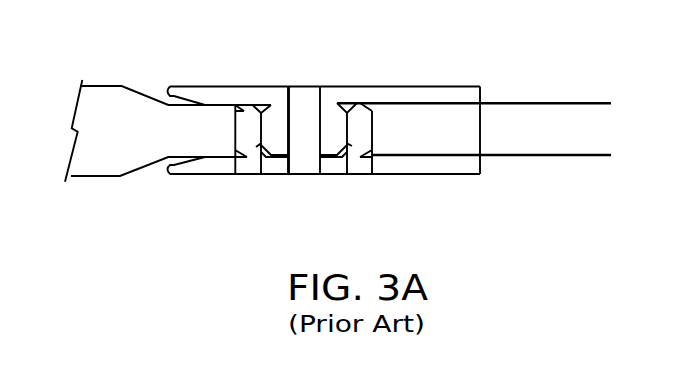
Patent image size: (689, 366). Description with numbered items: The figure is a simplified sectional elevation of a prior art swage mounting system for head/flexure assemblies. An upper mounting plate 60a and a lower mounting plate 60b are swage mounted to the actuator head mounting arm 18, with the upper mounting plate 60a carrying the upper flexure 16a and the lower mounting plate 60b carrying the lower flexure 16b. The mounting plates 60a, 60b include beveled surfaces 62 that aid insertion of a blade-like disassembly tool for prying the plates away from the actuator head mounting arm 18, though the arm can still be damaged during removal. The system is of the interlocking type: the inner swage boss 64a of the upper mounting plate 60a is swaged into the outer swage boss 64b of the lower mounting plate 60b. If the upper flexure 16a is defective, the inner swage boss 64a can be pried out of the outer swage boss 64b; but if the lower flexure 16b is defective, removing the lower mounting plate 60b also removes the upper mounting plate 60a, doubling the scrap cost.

The actuator head mounting arm 18 is at (108, 108).
The beveled surfaces 62 is at (185, 97).
The upper mounting plate 60a is at (438, 93).
The lower mounting plate 60b is at (438, 165).
The inner swage boss 64a is at (332, 123).
The outer swage boss 64b is at (359, 134).
The upper flexure 16a is at (567, 98).
The lower flexure 16b is at (567, 157).